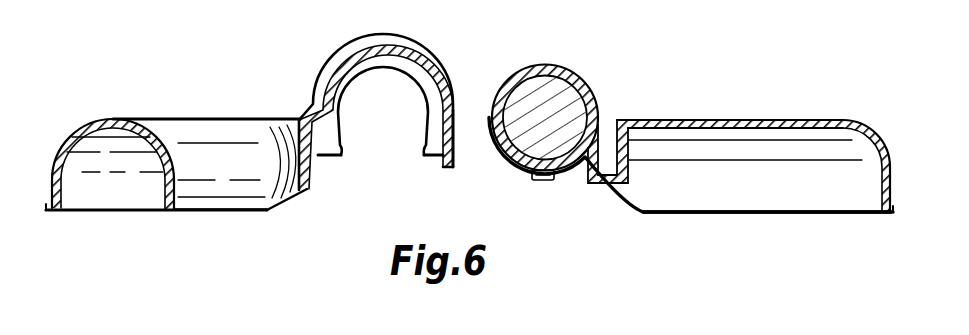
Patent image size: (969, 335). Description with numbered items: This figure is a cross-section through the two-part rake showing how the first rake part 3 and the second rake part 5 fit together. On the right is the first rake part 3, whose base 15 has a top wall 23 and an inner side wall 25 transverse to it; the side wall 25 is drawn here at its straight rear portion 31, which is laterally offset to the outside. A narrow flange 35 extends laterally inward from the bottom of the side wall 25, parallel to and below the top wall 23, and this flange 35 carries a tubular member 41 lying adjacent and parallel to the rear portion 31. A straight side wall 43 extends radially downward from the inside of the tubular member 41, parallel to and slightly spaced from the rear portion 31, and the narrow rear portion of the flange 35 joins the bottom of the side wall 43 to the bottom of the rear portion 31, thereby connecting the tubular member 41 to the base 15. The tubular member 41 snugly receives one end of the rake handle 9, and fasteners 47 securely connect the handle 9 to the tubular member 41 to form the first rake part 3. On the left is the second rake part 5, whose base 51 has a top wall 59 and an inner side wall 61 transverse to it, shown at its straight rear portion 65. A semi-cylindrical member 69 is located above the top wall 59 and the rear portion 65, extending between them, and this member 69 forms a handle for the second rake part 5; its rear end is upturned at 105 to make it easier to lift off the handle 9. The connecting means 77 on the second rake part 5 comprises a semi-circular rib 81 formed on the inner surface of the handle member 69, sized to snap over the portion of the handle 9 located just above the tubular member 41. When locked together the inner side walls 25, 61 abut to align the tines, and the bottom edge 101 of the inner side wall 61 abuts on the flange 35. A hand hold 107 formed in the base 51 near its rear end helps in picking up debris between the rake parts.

The first rake part 3 is at (690, 224).
The second rake part 5 is at (226, 227).
The rake handle 9 is at (563, 100).
The base 15 is at (800, 111).
The top wall 23 is at (667, 120).
The inner side wall 25 is at (637, 177).
The rear portion 31 is at (612, 172).
The flange 35 is at (610, 174).
The tubular member 41 is at (567, 74).
The side wall 43 is at (586, 170).
The fasteners 47 is at (545, 181).
The base 51 is at (243, 115).
The top wall 59 is at (192, 118).
The inner side wall 61 is at (459, 143).
The rear portion 65 is at (452, 166).
The semi-cylindrical member 69 is at (413, 53).
The connecting means 77 is at (350, 91).
The semi-circular rib 81 is at (342, 157).
The bottom edge 101 is at (420, 157).
The upturned rear end 105 is at (380, 33).
The hand hold 107 is at (125, 119).